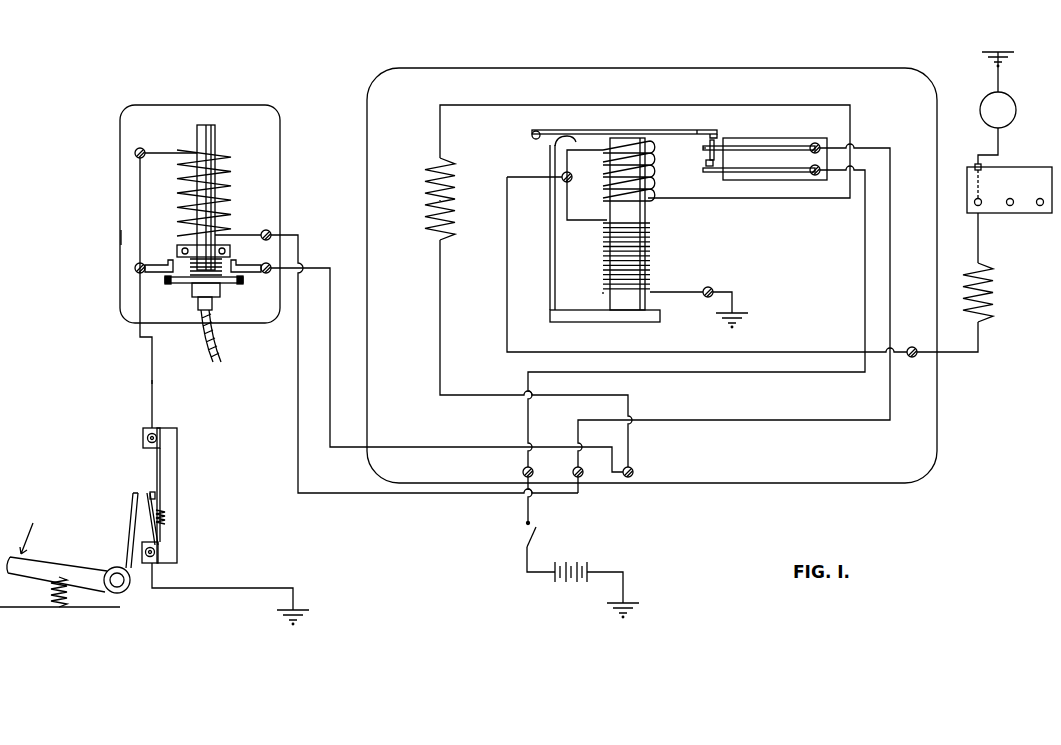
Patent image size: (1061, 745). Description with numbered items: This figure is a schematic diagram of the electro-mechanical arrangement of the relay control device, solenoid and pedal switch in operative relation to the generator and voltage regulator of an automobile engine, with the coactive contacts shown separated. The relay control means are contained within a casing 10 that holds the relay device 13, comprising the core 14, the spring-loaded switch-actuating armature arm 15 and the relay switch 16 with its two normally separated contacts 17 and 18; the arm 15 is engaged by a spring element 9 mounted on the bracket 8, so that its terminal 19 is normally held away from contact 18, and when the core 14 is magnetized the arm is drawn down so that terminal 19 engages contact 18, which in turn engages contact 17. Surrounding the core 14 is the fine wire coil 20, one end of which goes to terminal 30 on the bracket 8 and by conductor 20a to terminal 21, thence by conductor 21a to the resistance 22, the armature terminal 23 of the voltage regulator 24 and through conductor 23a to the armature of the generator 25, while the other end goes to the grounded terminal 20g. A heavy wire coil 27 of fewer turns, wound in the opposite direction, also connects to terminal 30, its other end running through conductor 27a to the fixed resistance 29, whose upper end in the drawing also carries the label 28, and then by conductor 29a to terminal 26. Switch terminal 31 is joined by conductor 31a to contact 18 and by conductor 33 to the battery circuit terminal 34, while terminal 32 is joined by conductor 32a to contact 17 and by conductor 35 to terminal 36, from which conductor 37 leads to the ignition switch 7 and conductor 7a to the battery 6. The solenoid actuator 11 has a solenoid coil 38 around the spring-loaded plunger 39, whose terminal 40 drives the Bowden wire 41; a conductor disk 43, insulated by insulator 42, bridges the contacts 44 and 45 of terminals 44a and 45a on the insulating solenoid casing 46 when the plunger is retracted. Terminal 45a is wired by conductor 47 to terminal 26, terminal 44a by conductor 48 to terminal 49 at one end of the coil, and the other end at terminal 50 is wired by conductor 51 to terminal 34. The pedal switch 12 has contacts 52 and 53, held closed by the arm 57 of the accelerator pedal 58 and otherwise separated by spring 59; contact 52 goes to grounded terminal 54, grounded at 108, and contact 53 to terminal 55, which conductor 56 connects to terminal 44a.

The battery 6 is at (552, 575).
The ignition switch 7 is at (527, 540).
The conductor 7a is at (527, 566).
The bracket 8 is at (548, 213).
The spring element 9 is at (575, 135).
The casing 10 is at (538, 68).
The needle valve solenoid actuator 11 is at (221, 106).
The pedal switch 12 is at (184, 460).
The relay device 13 is at (648, 248).
The core 14 is at (647, 218).
The switch-actuating armature arm 15 is at (699, 130).
The relay switch 16 is at (777, 140).
The contact 17 is at (705, 167).
The contact 18 is at (705, 149).
The terminal 19 is at (714, 139).
The fine wire coil 20 is at (648, 270).
The conductor 20a is at (507, 306).
The grounded terminal 20g is at (705, 300).
The terminal 21 is at (910, 348).
The conductor 21a is at (948, 356).
The resistance 22 is at (989, 268).
The armature terminal 23 is at (982, 206).
The conductor 23a is at (999, 152).
The voltage regulator 24 is at (1022, 212).
The generator 25 is at (1012, 100).
The terminal 26 is at (635, 470).
The heavy wire coil 27 is at (646, 176).
The conductor 27a is at (738, 200).
The resistor 28 is at (436, 156).
The fixed resistance 29 is at (452, 192).
The conductor 29a is at (442, 272).
The terminal 30 is at (570, 181).
The terminal 31 is at (816, 143).
The conductor 31a is at (740, 146).
The terminal 32 is at (816, 178).
The conductor 32a is at (772, 174).
The conductor 33 is at (892, 252).
The battery circuit terminal 34 is at (573, 472).
The conductor 35 is at (866, 298).
The terminal 36 is at (523, 472).
The conductor 37 is at (524, 514).
The solenoid coil 38 is at (230, 175).
The spring-loaded plunger 39 is at (216, 131).
The terminal 40 is at (213, 305).
The Bowden wire 41 is at (218, 345).
The insulator 42 is at (222, 293).
The conductor disk 43 is at (180, 285).
The contact 44 is at (170, 263).
The terminal 44a is at (136, 271).
The contact 45 is at (236, 262).
The terminal 45a is at (270, 265).
The solenoid casing 46 is at (122, 237).
The conductor 47 is at (331, 366).
The conductor 48 is at (140, 185).
The terminal 49 is at (141, 149).
The terminal 50 is at (270, 232).
The conductor 51 is at (298, 433).
The contact 52 is at (147, 490).
The contact 53 is at (150, 491).
The grounded terminal 54 is at (158, 550).
The terminal 55 is at (154, 432).
The conductor 56 is at (155, 382).
The arm 57 is at (133, 495).
The accelerator pedal 58 is at (60, 572).
The spring 59 is at (164, 509).
The ground 108 is at (294, 592).